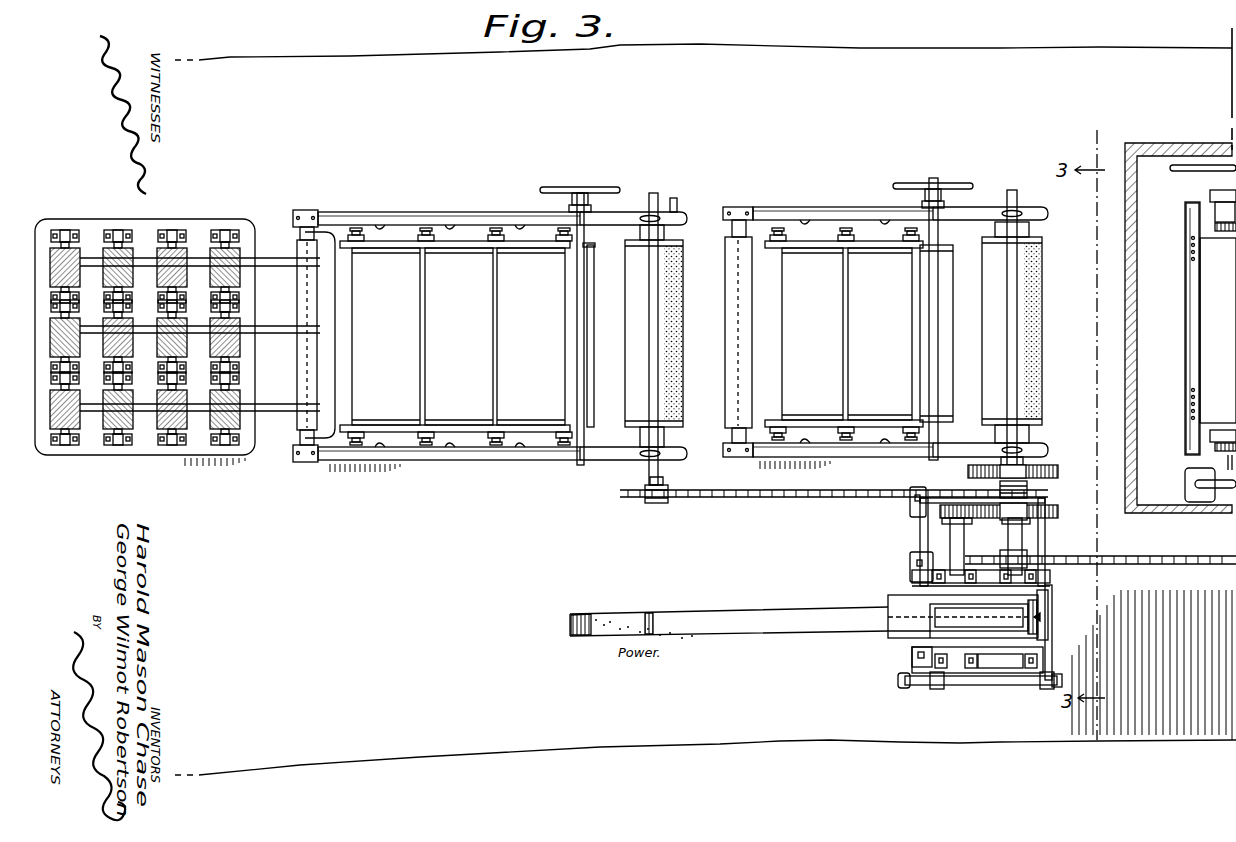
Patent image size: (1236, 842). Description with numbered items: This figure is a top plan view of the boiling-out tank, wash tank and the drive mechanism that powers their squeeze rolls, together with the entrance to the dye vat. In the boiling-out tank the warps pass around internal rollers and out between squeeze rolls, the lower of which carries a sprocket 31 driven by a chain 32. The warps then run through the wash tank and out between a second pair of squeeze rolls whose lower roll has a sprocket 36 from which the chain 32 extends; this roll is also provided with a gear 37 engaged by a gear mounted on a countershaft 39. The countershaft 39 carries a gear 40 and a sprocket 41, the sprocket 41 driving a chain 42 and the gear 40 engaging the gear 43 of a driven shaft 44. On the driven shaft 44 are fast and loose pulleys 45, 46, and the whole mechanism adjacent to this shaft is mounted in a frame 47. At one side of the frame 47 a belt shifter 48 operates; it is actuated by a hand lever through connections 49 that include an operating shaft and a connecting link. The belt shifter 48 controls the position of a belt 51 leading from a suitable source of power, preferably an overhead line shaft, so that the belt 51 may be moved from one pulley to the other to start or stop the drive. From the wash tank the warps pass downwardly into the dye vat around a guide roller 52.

The sprocket 31 is at (648, 503).
The chain 32 is at (768, 498).
The sprocket 36 is at (1030, 490).
The gear 37 is at (1052, 470).
The countershaft 39 is at (1022, 540).
The gear 40 is at (1058, 512).
The sprocket 41 is at (1000, 557).
The chain 42 is at (1083, 564).
The gear 43 is at (920, 520).
The driven shaft 44 is at (957, 535).
The fast pulley 45 is at (888, 603).
The loose pulley 46 is at (892, 640).
The frame 47 is at (995, 665).
The belt shifter 48 is at (1050, 613).
The connections 49 is at (1043, 674).
The belt 51 is at (798, 634).
The guide roller 52 is at (1220, 398).